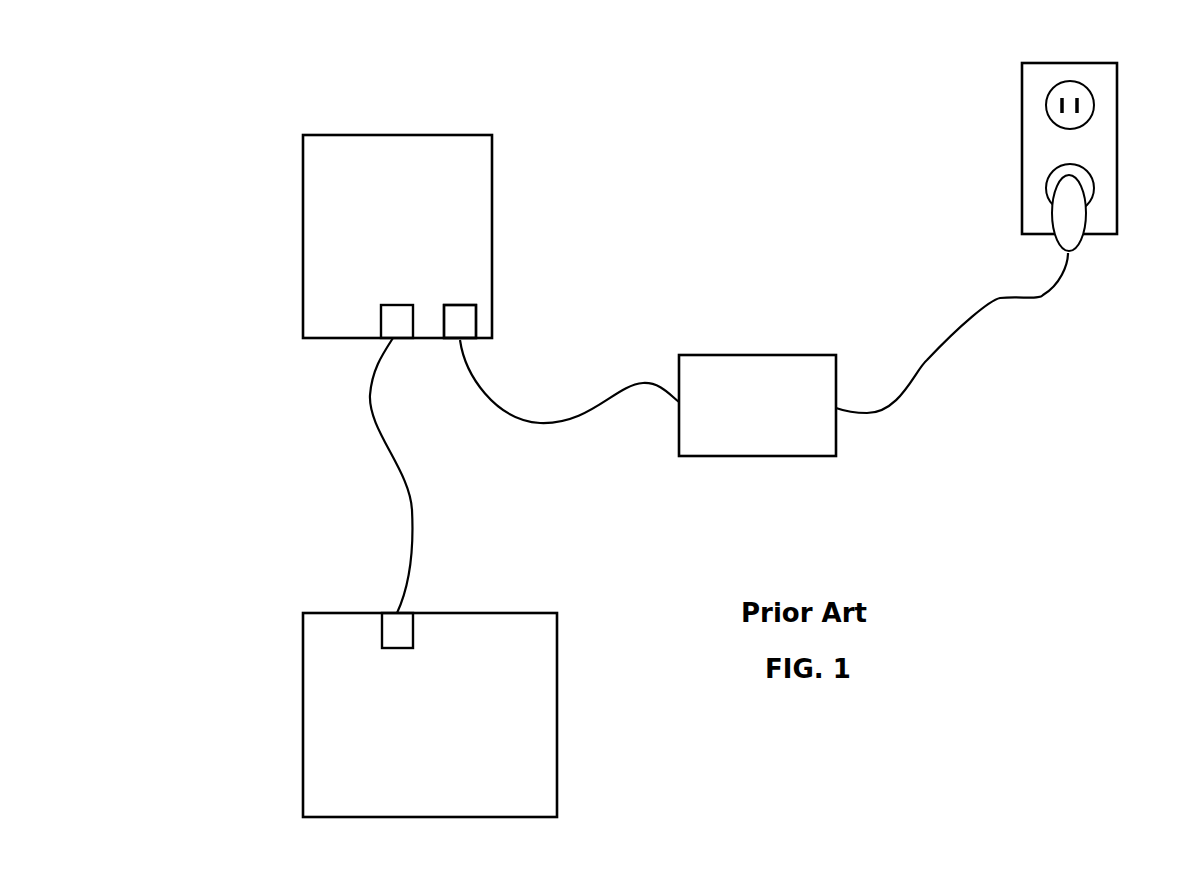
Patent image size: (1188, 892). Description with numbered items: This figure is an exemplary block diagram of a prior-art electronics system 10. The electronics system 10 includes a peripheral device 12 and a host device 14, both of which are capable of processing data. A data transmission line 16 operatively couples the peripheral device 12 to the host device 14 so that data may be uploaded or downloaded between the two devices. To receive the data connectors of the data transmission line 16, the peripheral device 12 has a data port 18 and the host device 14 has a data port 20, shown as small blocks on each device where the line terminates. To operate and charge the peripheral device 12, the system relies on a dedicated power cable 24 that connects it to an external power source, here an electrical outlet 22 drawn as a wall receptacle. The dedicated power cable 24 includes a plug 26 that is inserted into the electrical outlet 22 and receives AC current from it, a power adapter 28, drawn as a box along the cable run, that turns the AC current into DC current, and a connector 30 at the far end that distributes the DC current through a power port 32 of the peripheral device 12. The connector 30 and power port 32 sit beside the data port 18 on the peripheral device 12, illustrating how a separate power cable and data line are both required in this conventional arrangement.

The electronics system 10 is at (250, 147).
The peripheral device 12 is at (461, 186).
The host device 14 is at (519, 665).
The data transmission line 16 is at (412, 512).
The data port 18 is at (381, 322).
The data port 20 is at (382, 630).
The electrical outlet 22 is at (1038, 148).
The dedicated power cable 24 is at (872, 258).
The plug 26 is at (1082, 238).
The power adapter 28 is at (806, 398).
The connector 30 is at (460, 323).
The power port 32 is at (460, 321).